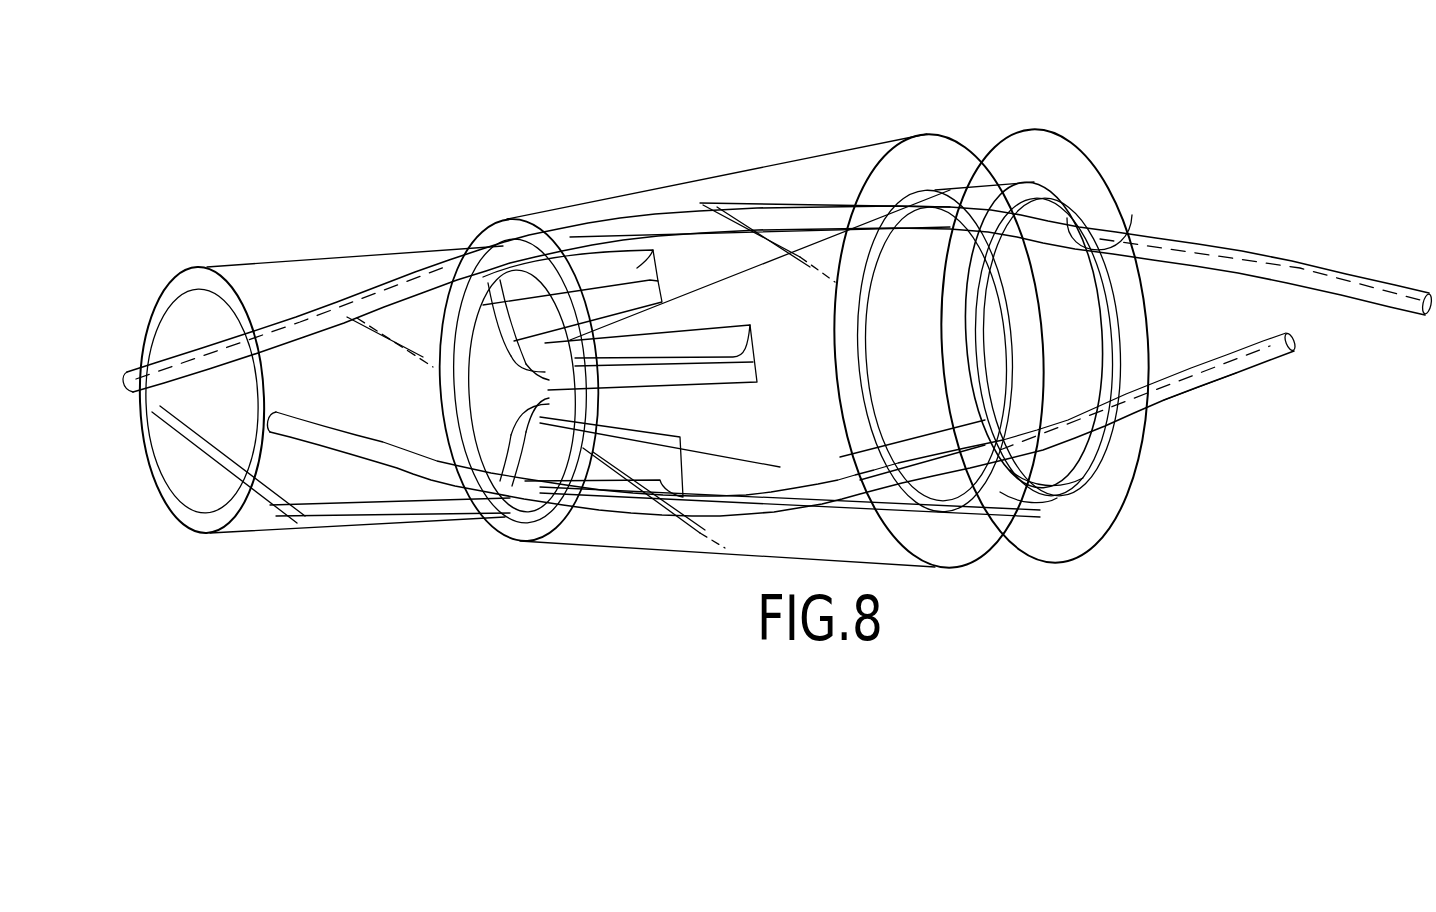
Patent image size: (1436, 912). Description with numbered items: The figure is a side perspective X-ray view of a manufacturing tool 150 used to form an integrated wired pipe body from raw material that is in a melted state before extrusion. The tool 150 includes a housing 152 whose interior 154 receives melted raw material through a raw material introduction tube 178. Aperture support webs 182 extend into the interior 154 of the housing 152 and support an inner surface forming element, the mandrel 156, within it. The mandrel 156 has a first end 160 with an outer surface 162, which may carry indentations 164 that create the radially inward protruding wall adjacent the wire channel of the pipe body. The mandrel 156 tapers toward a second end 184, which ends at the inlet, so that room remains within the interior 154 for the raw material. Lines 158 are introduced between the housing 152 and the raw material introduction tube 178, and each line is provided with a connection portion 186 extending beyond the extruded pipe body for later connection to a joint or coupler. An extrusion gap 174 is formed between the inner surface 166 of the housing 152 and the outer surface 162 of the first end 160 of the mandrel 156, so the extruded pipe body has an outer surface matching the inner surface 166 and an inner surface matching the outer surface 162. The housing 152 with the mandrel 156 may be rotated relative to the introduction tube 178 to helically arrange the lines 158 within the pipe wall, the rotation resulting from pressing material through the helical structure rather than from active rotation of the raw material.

The manufacturing tool 150 is at (628, 118).
The housing 152 is at (831, 172).
The interior 154 is at (697, 268).
The mandrel 156 is at (1087, 328).
The lines 158 is at (778, 352).
The first end 160 is at (1090, 368).
The outer surface 162 is at (1074, 338).
The indentations 164 is at (1132, 234).
The inner surface 166 is at (1083, 478).
The extrusion gap 174 is at (1057, 498).
The raw material introduction tube 178 is at (192, 302).
The aperture support webs 182 is at (595, 278).
The second end 184 is at (500, 386).
The connection portion 186 is at (1193, 397).